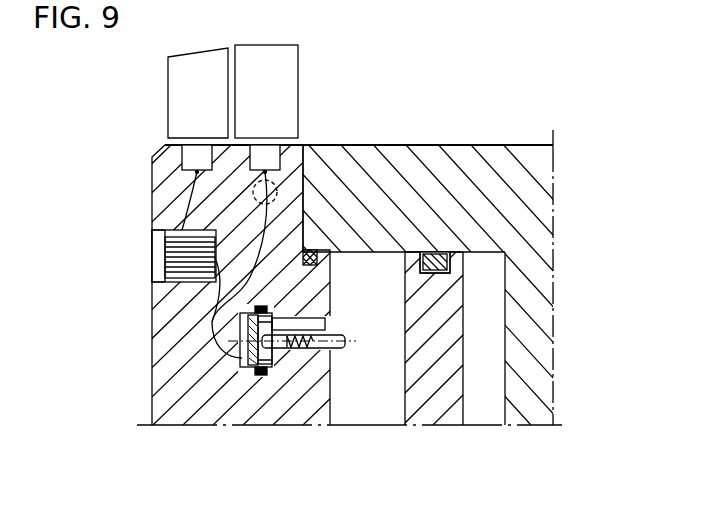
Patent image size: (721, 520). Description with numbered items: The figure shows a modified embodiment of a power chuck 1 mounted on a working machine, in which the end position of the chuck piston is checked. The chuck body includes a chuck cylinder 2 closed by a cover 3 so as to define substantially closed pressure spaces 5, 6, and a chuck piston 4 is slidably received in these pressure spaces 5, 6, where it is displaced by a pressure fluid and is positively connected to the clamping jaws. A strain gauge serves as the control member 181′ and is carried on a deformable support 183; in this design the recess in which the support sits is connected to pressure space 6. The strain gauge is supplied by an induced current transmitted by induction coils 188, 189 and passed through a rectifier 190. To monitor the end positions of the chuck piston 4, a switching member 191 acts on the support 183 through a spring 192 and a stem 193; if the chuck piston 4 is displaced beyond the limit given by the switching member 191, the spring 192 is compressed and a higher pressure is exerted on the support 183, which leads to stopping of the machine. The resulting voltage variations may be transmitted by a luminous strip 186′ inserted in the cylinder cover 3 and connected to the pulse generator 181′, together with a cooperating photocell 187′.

The power chuck 1 is at (455, 144).
The chuck cylinder 2 is at (488, 173).
The cover 3 is at (166, 203).
The chuck piston 4 is at (453, 326).
The pressure space 5 is at (492, 368).
The pressure space 6 is at (392, 393).
The control member 181′ is at (239, 396).
The deformable support 183 is at (238, 367).
The luminous strip 186′ is at (268, 158).
The photocell 187′ is at (283, 100).
The induction coil 188 is at (183, 92).
The induction coil 189 is at (192, 156).
The rectifier 190 is at (185, 275).
The switching member 191 is at (341, 350).
The spring 192 is at (295, 352).
The stem 193 is at (278, 357).